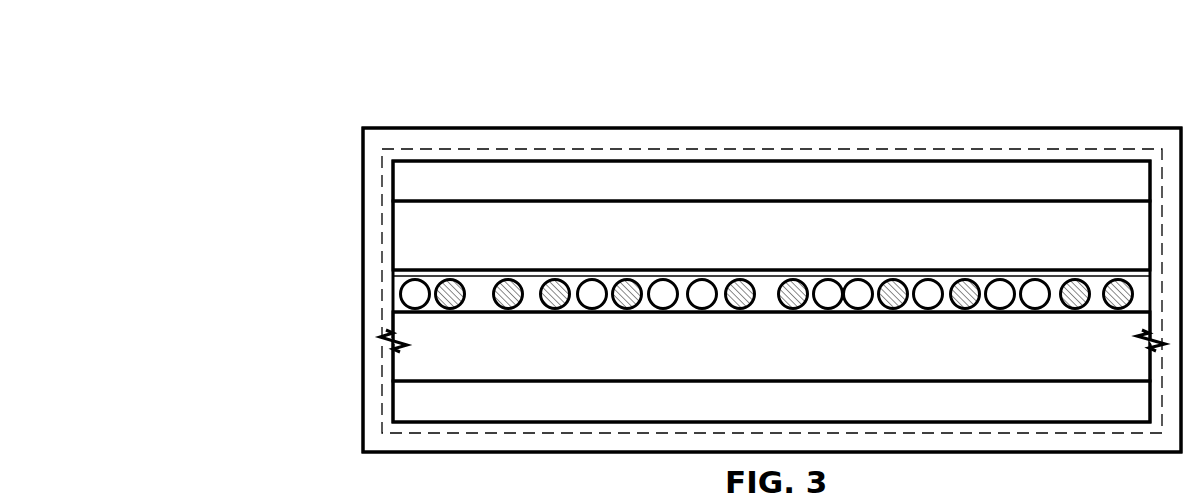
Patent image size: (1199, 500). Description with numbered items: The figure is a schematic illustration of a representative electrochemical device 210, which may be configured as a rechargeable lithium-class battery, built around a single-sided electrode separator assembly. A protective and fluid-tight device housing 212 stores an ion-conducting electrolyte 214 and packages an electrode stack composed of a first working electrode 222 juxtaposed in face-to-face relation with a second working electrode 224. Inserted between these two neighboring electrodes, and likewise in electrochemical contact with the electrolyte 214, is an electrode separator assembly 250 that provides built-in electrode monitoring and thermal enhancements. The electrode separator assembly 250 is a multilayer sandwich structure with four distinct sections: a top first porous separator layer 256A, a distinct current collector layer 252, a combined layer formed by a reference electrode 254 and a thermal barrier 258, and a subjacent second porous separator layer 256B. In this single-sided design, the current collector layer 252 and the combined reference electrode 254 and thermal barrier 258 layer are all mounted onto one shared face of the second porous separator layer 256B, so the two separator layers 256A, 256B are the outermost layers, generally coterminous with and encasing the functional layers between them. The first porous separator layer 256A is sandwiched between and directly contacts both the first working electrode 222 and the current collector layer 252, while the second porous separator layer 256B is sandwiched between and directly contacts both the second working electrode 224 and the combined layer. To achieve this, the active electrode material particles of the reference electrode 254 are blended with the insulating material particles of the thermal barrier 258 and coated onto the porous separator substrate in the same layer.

The electrochemical device 210 is at (232, 83).
The device housing 212 is at (363, 138).
The electrolyte 214 is at (383, 173).
The first working electrode 222 is at (392, 182).
The second working electrode 224 is at (393, 408).
The electrode separator assembly 250 is at (233, 315).
The current collector layer 252 is at (393, 272).
The reference electrode 254 is at (400, 299).
The first porous separator layer 256A is at (392, 232).
The second porous separator layer 256B is at (393, 363).
The thermal barrier 258 is at (432, 312).